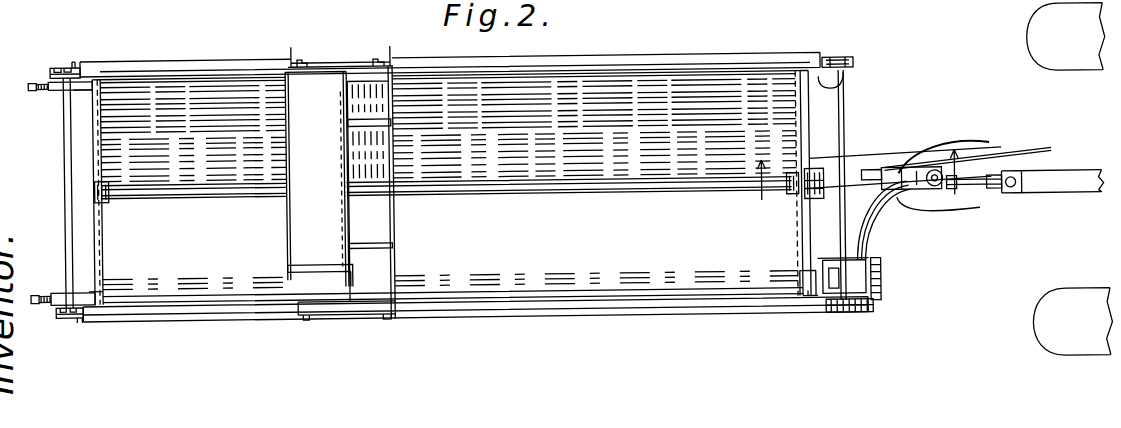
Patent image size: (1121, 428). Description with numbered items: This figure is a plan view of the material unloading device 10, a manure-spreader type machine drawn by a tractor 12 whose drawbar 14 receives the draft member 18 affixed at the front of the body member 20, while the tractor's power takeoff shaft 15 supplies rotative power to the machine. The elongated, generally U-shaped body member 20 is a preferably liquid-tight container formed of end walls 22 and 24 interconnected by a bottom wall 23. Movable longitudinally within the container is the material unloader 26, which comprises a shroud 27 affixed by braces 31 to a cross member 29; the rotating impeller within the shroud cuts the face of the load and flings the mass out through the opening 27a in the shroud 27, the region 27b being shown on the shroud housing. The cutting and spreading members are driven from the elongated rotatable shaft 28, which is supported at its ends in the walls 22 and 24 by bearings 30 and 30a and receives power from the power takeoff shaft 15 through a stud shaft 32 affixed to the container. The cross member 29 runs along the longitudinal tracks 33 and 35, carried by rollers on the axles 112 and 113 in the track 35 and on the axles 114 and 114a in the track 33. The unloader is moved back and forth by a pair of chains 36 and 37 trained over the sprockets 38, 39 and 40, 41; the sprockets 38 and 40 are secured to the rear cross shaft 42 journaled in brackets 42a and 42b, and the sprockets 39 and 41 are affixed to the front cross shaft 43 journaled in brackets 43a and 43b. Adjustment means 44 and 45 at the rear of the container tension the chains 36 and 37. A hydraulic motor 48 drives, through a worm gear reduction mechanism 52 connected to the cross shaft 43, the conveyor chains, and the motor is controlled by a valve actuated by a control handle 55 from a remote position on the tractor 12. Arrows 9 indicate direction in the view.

The direction arrow 9 is at (862, 184).
The material unloading device 10 is at (571, 338).
The tractor 12 is at (1052, 352).
The drawbar 14 is at (1064, 184).
The power takeoff shaft 15 is at (935, 222).
The draft member 18 is at (851, 182).
The body member 20 is at (197, 287).
The end wall 22 is at (102, 139).
The bottom wall 23 is at (614, 137).
The end wall 24 is at (796, 122).
The material unloader 26 is at (407, 158).
The shroud 27 is at (288, 131).
The opening 27a is at (310, 276).
The carriage housing 27b is at (344, 222).
The rotatable shaft 28 is at (190, 186).
The cross member 29 is at (345, 62).
The bearing 30 is at (101, 184).
The bearing 30a is at (790, 203).
The brace 31 is at (373, 127).
The stud shaft 32 is at (925, 206).
The track 33 is at (510, 321).
The track 35 is at (519, 68).
The chain 36 is at (77, 322).
The chain 37 is at (74, 62).
The sprocket 38 is at (60, 318).
The sprocket 39 is at (834, 323).
The sprocket 40 is at (57, 68).
The sprocket 41 is at (849, 66).
The cross shaft 42 is at (63, 203).
The bracket 42a is at (82, 290).
The bracket 42b is at (73, 90).
The cross shaft 43 is at (843, 126).
The bracket 43a is at (812, 307).
The bracket 43b is at (845, 94).
The adjustment means 44 is at (58, 293).
The adjustment means 45 is at (52, 90).
The hydraulic motor 48 is at (879, 302).
The worm gear reduction mechanism 52 is at (806, 316).
The control handle 55 is at (1008, 161).
The axle 112 is at (301, 61).
The axle 113 is at (388, 60).
The axle 114 is at (302, 326).
The axle 114a is at (386, 326).